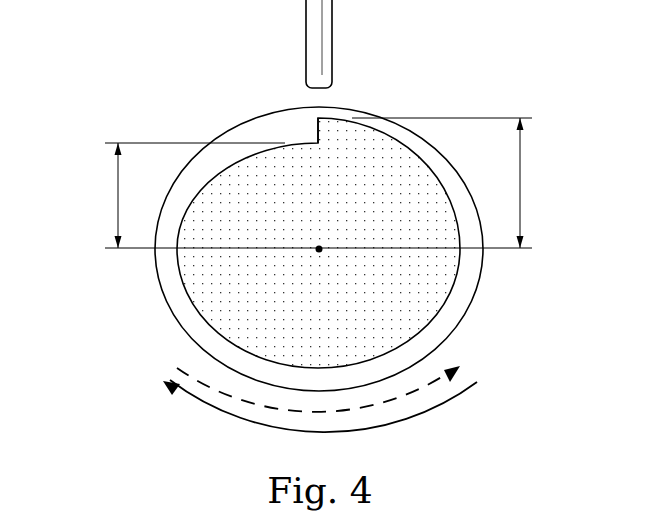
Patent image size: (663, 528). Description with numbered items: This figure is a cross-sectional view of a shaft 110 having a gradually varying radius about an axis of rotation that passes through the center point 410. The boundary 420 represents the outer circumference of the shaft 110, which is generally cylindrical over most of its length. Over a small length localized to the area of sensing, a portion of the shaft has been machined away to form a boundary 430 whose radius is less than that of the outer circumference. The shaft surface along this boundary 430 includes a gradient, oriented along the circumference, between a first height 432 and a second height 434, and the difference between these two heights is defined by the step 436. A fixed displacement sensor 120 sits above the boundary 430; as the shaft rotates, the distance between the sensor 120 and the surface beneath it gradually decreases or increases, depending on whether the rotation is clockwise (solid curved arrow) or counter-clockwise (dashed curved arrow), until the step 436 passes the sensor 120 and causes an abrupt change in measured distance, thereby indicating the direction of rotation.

The shaft 110 is at (378, 83).
The displacement sensor 120 is at (306, 47).
The center point 410 is at (321, 242).
The boundary 420 is at (157, 272).
The boundary 430 is at (455, 266).
The first height 432 is at (521, 185).
The second height 434 is at (117, 196).
The step 436 is at (317, 132).